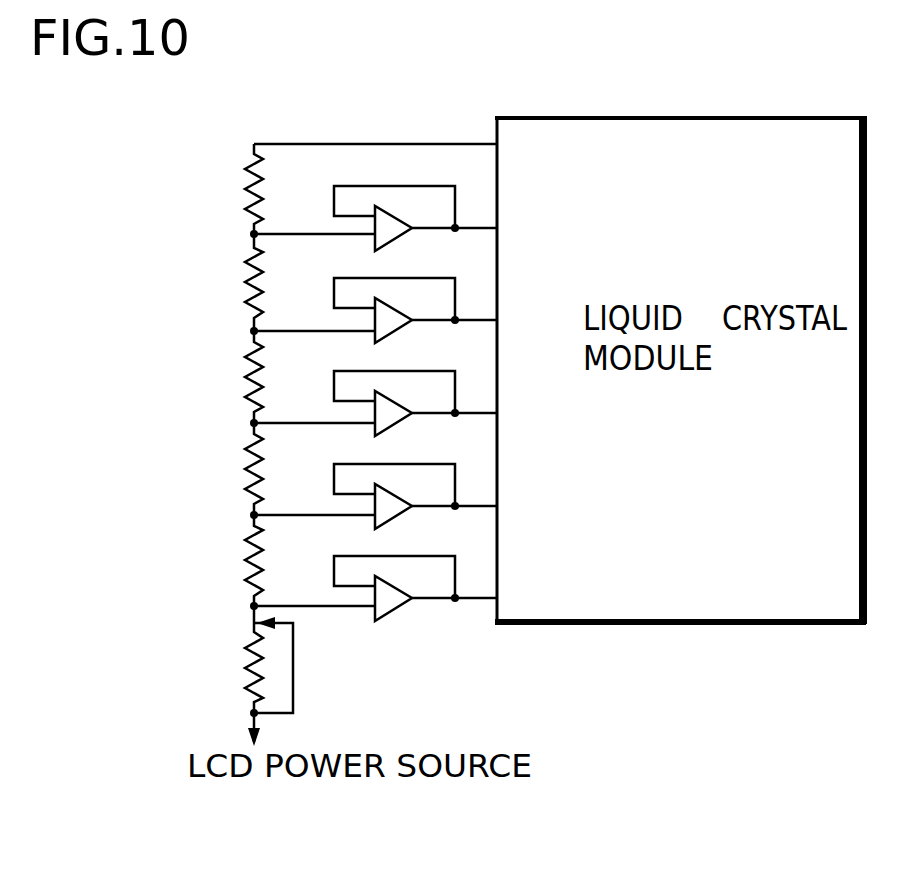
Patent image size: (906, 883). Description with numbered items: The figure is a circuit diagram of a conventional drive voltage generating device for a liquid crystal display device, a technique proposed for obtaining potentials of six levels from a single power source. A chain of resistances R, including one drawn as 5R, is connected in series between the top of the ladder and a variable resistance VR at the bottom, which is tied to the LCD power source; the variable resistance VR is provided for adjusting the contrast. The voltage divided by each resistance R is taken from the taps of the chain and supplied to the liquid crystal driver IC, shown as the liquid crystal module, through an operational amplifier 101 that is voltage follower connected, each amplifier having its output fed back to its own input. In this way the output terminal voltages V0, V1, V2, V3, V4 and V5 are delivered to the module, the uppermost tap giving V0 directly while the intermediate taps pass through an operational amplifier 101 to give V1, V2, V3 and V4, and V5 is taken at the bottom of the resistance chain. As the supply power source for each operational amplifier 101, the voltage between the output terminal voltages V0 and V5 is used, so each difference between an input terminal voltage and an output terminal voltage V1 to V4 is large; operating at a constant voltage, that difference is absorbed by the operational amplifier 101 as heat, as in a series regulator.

The operational amplifier 101 is at (393, 229).
The resistance R is at (269, 375).
The ladder resistor of five-fold resistance 5R is at (278, 377).
The variable resistance VR is at (295, 676).
The output terminal voltage V0 is at (396, 144).
The output terminal voltage V1 is at (474, 228).
The output terminal voltage V2 is at (474, 320).
The output terminal voltage V3 is at (474, 413).
The output terminal voltage V4 is at (474, 506).
The output terminal voltage V5 is at (474, 598).